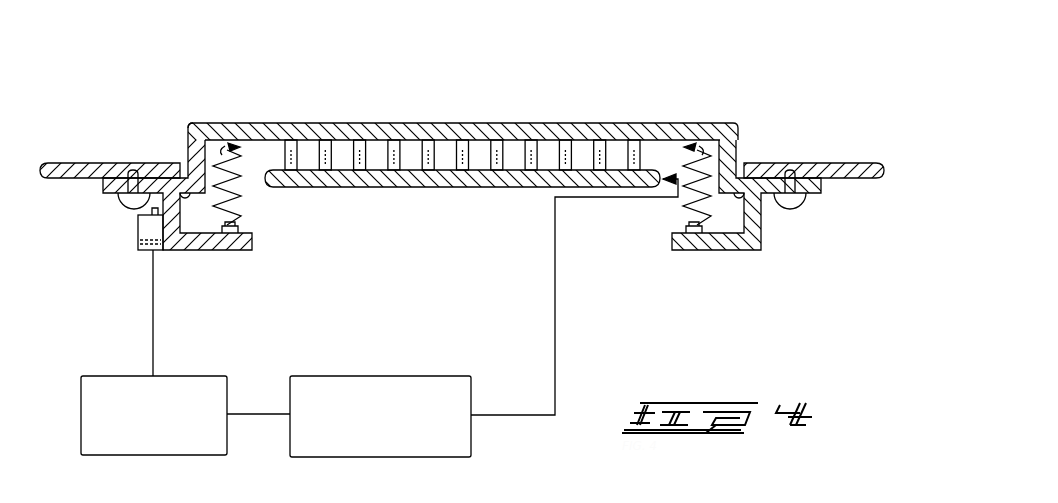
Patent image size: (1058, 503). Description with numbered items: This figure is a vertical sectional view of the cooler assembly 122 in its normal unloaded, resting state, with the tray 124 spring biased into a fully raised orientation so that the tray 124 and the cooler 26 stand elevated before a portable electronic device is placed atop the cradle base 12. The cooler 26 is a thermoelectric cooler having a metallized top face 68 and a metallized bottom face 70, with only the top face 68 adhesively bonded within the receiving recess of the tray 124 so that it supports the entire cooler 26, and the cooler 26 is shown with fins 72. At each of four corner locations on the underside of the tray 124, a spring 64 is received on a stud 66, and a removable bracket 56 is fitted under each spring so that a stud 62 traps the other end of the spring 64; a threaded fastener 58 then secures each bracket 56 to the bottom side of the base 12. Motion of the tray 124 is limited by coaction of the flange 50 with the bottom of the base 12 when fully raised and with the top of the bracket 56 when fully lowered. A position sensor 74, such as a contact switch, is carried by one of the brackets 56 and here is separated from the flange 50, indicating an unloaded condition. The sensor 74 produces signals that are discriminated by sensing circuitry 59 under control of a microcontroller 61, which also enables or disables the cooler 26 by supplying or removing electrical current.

The cradle base 12 is at (98, 162).
The cooler 26 is at (340, 112).
The flange 50 is at (170, 186).
The bracket 56 is at (193, 252).
The threaded fastener 58 is at (130, 210).
The sensing circuitry 59 is at (193, 375).
The microcontroller 61 is at (432, 375).
The stud 62 is at (236, 216).
The spring 64 is at (233, 197).
The stud 66 is at (238, 144).
The metallized top face 68 is at (475, 123).
The metallized bottom face 70 is at (400, 188).
The fins 72 is at (473, 160).
The position sensor 74 is at (148, 250).
The cooler assembly 122 is at (580, 74).
The tray 124 is at (210, 123).